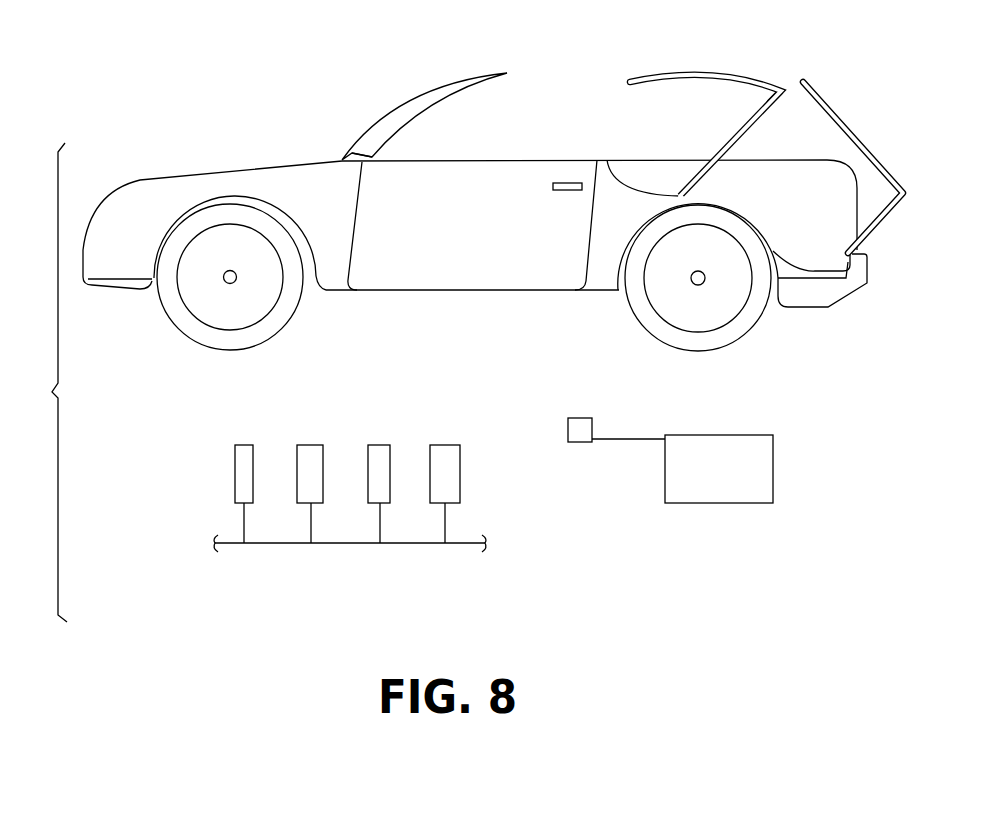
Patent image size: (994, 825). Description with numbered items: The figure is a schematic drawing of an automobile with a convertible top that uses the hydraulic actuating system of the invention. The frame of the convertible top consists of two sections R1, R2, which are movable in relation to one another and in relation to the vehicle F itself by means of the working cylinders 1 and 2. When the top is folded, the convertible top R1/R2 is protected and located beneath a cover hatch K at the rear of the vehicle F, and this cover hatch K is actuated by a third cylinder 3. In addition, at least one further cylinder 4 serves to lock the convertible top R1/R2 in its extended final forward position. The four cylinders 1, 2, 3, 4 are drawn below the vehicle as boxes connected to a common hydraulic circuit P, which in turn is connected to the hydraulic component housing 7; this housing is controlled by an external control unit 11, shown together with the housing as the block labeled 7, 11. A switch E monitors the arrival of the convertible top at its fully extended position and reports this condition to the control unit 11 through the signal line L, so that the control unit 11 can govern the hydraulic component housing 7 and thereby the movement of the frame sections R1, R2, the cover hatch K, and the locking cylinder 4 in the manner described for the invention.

The vehicle F is at (512, 275).
The convertible top frame section R1 is at (709, 74).
The convertible top frame section R2 is at (740, 128).
The cover hatch K is at (845, 122).
The working cylinder 1 is at (240, 467).
The working cylinder 2 is at (302, 464).
The third cylinder 3 is at (373, 472).
The cylinder 4 is at (436, 467).
The hydraulic circuit P is at (345, 546).
The switch E is at (573, 433).
The signal line L is at (627, 437).
The hydraulic component housing 7 is at (746, 469).
The control unit 11 is at (766, 473).